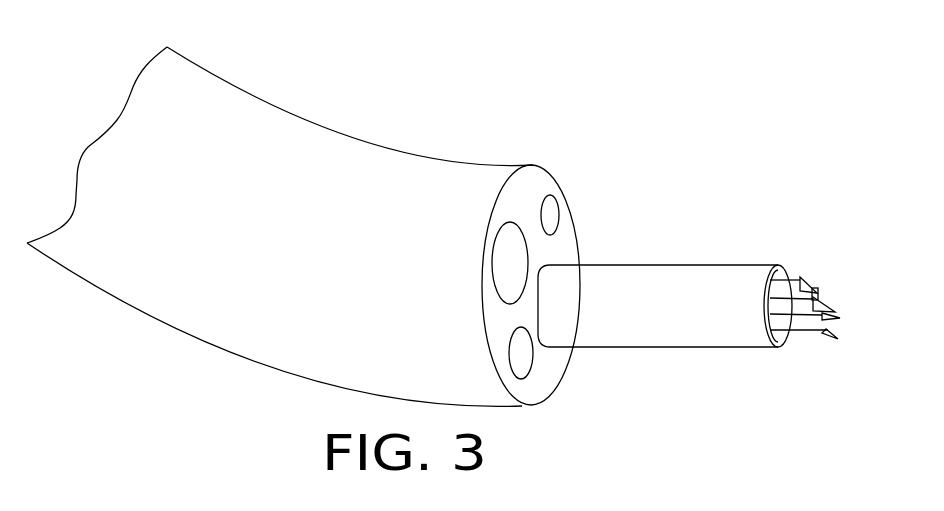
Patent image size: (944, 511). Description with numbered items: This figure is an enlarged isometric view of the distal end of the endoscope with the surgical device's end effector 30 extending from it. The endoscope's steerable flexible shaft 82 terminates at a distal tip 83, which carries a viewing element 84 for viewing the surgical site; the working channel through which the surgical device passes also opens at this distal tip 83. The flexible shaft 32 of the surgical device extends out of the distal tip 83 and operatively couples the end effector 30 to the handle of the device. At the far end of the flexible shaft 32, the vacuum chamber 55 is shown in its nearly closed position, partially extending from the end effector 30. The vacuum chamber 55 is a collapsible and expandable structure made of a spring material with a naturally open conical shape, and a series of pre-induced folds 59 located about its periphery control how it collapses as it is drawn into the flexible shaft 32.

The end effector 30 is at (709, 350).
The flexible shaft 32 is at (737, 280).
The vacuum chamber 55 is at (805, 285).
The pre-induced folds 59 is at (832, 340).
The steerable flexible shaft 82 is at (427, 180).
The distal tip 83 is at (542, 386).
The viewing element 84 is at (551, 214).